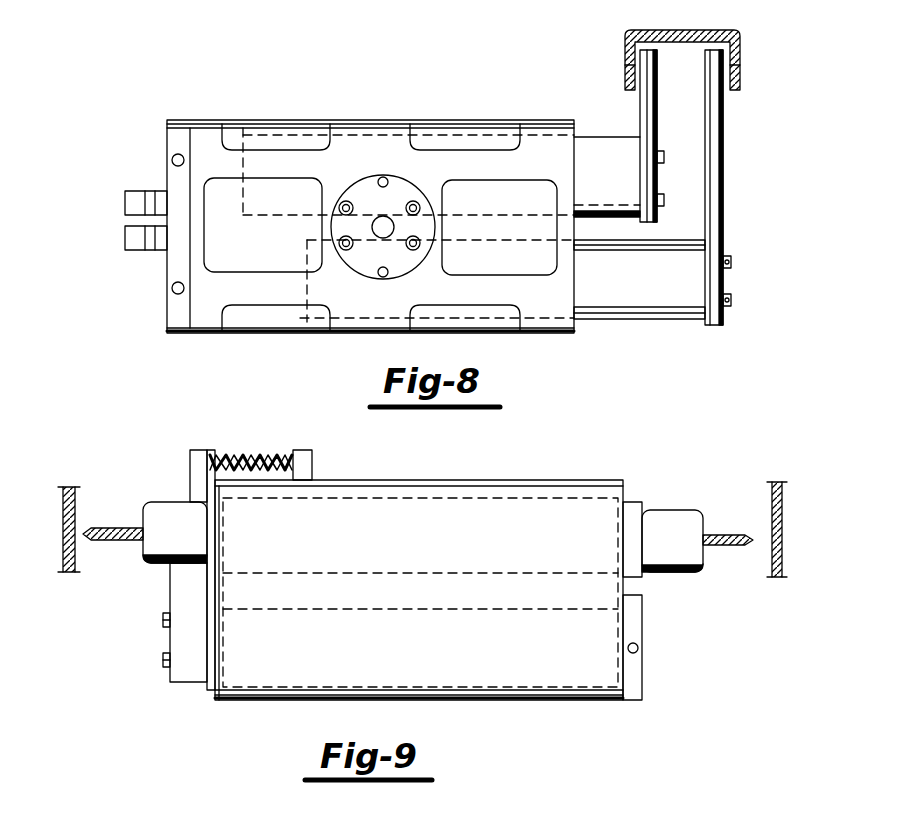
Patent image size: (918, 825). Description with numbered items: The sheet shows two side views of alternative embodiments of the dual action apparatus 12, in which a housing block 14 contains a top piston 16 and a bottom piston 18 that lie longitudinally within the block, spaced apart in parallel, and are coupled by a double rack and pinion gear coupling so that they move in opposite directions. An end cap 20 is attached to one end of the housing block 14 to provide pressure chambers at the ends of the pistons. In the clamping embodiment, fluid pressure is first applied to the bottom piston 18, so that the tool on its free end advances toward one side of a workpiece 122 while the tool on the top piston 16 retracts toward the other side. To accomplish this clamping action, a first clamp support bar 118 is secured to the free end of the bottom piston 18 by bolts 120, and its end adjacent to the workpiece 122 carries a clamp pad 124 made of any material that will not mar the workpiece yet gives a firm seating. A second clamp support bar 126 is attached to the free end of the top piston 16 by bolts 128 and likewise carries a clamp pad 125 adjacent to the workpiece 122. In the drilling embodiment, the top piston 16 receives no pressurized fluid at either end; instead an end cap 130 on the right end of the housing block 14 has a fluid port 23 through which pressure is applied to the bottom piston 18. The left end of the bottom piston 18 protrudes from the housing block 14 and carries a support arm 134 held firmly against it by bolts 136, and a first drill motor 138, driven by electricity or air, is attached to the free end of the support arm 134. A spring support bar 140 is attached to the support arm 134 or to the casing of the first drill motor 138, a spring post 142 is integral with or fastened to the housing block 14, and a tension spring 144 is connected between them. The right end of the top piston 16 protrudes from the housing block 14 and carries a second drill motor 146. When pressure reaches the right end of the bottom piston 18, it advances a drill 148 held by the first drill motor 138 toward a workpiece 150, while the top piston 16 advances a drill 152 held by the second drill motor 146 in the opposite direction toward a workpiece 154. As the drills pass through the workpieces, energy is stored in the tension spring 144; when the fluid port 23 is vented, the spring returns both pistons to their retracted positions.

In FIG. 8, the dual action apparatus 12 is at (482, 86).
In FIG. 9, the dual action apparatus 12 is at (542, 463).
In FIG. 8, the housing block 14 is at (366, 126).
In FIG. 9, the housing block 14 is at (490, 485).
In FIG. 8, the top piston 16 is at (376, 122).
In FIG. 9, the top piston 16 is at (528, 490).
In FIG. 8, the bottom piston 18 is at (372, 333).
In FIG. 9, the bottom piston 18 is at (485, 700).
In FIG. 8, the end cap 20 is at (170, 120).
In FIG. 9, the fluid port 23 is at (638, 648).
In FIG. 8, the first clamp support bar 118 is at (724, 185).
In FIG. 8, the bolts 120 is at (732, 308).
In FIG. 8, the workpiece 122 is at (678, 32).
In FIG. 8, the clamp pad 124 is at (736, 66).
In FIG. 8, the clamp pad 125 is at (624, 70).
In FIG. 8, the second clamp support bar 126 is at (656, 110).
In FIG. 8, the bolts 128 is at (663, 214).
In FIG. 9, the end cap 130 is at (628, 702).
In FIG. 9, the support arm 134 is at (170, 600).
In FIG. 9, the bolts 136 is at (162, 670).
In FIG. 9, the first drill motor 138 is at (167, 512).
In FIG. 9, the spring support bar 140 is at (198, 450).
In FIG. 9, the spring post 142 is at (312, 462).
In FIG. 9, the tension spring 144 is at (258, 455).
In FIG. 9, the second drill motor 146 is at (662, 510).
In FIG. 9, the drill 148 is at (116, 540).
In FIG. 9, the workpiece 150 is at (69, 487).
In FIG. 9, the drill 152 is at (720, 546).
In FIG. 9, the workpiece 154 is at (778, 487).